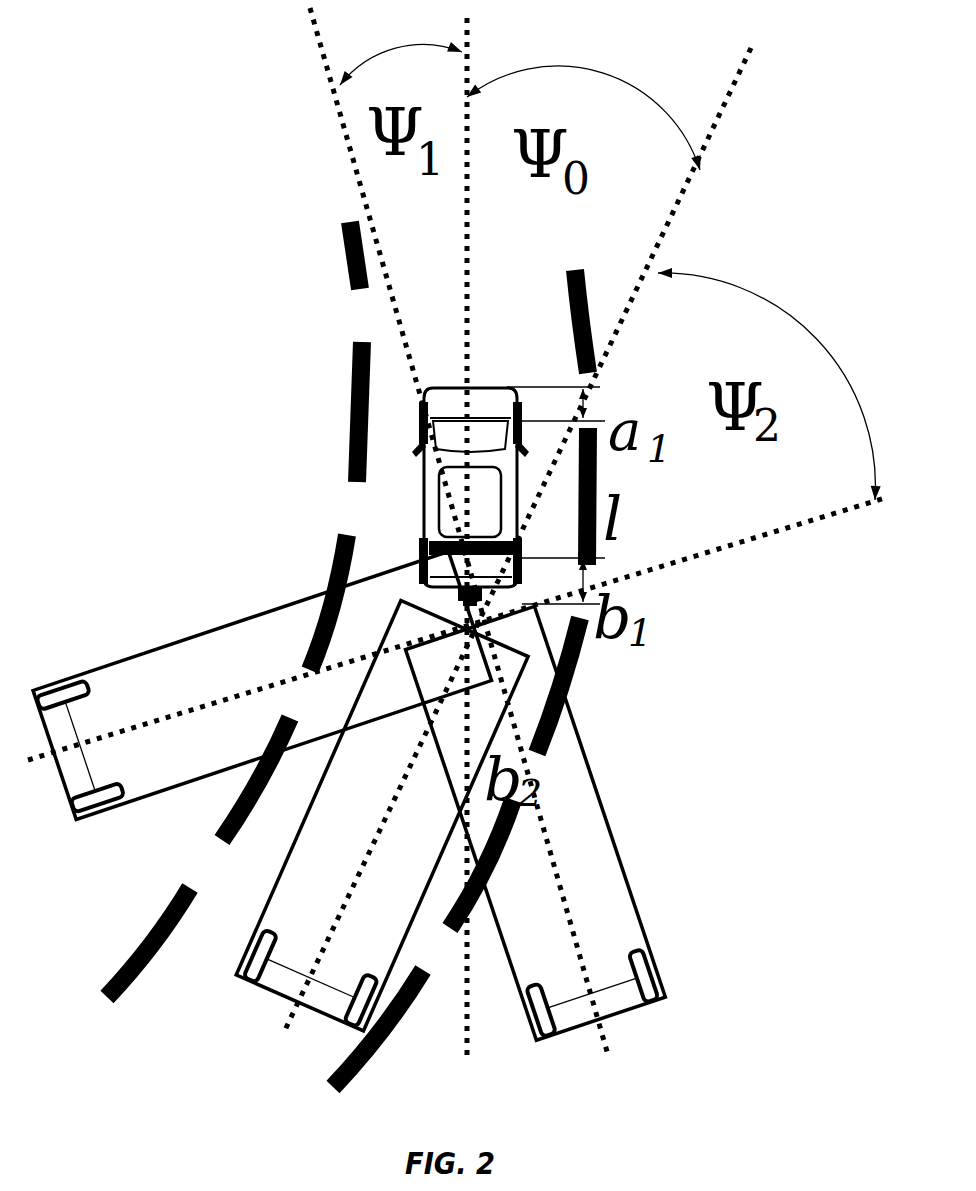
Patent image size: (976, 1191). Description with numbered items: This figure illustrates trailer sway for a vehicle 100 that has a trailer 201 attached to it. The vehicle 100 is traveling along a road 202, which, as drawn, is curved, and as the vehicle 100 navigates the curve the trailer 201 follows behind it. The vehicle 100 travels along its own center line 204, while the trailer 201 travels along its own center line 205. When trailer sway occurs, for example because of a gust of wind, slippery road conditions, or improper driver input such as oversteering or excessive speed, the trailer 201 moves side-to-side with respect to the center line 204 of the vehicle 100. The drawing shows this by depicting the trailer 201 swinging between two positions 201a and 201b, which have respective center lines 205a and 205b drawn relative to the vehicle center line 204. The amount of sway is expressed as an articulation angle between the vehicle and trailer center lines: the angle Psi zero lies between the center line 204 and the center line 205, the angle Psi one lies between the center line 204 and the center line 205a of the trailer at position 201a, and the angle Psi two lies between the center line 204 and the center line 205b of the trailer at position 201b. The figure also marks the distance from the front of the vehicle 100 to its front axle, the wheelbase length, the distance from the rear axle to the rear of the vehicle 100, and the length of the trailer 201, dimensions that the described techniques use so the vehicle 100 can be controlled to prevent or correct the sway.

The vehicle 100 is at (492, 388).
The trailer 201 is at (267, 903).
The position of the trailer 201a is at (652, 952).
The position of the trailer 201b is at (167, 647).
The road 202 is at (350, 303).
The center line of the vehicle 204 is at (466, 276).
The center line of the trailer 205 is at (672, 216).
The center line of the trailer at position 201a 205a is at (360, 184).
The center line of the trailer at position 201b 205b is at (783, 530).